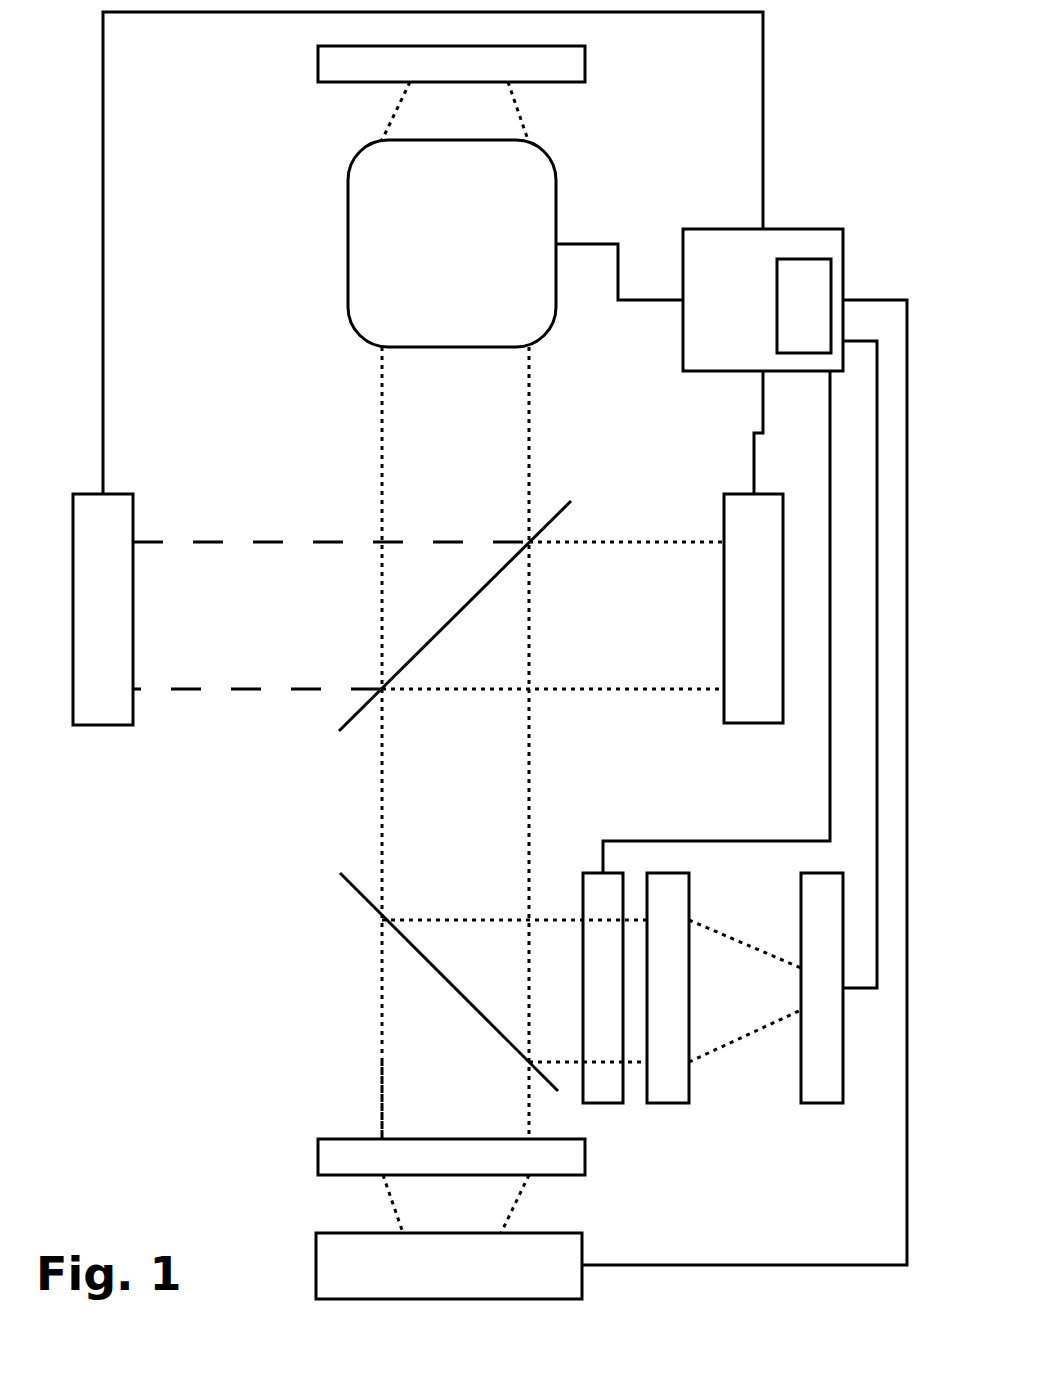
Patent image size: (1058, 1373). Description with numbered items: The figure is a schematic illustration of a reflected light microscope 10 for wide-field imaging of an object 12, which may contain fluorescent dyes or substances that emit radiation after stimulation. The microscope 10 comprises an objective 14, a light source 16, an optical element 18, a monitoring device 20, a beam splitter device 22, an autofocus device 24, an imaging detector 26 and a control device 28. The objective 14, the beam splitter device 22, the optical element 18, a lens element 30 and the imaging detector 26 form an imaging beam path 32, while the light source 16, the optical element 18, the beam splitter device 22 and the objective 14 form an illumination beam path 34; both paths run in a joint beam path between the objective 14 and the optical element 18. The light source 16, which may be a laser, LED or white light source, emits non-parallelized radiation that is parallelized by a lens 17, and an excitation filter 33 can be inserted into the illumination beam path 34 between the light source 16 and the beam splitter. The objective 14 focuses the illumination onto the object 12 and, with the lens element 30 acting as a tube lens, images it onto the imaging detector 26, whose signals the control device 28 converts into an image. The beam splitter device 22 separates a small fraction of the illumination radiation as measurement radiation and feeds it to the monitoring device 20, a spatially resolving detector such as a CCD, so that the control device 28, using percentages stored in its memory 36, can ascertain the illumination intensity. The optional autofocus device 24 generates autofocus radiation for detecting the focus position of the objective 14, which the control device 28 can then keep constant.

The reflected light microscope 10 is at (322, 832).
The object 12 is at (318, 62).
The objective 14 is at (348, 243).
The light source 16 is at (820, 1103).
The lens 17 is at (667, 1103).
The optical element 18 is at (368, 903).
The monitoring device 20 is at (754, 723).
The beam splitter device 22 is at (358, 707).
The autofocus device 24 is at (103, 725).
The imaging detector 26 is at (316, 1265).
The control device 28 is at (770, 229).
The lens element 30 is at (318, 1157).
The imaging beam path 32 is at (348, 1092).
The excitation filter 33 is at (602, 1103).
The illumination beam path 34 is at (545, 895).
The memory 36 is at (804, 259).